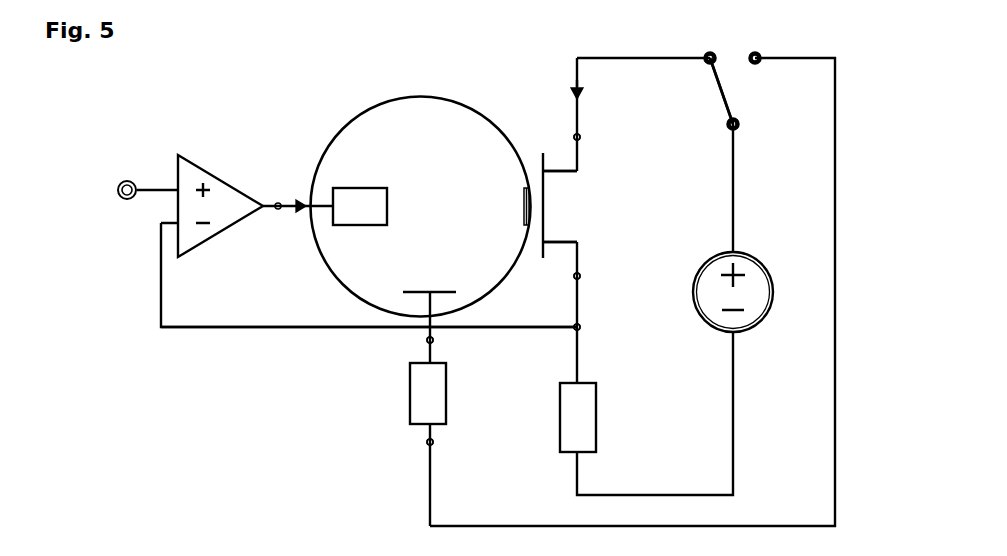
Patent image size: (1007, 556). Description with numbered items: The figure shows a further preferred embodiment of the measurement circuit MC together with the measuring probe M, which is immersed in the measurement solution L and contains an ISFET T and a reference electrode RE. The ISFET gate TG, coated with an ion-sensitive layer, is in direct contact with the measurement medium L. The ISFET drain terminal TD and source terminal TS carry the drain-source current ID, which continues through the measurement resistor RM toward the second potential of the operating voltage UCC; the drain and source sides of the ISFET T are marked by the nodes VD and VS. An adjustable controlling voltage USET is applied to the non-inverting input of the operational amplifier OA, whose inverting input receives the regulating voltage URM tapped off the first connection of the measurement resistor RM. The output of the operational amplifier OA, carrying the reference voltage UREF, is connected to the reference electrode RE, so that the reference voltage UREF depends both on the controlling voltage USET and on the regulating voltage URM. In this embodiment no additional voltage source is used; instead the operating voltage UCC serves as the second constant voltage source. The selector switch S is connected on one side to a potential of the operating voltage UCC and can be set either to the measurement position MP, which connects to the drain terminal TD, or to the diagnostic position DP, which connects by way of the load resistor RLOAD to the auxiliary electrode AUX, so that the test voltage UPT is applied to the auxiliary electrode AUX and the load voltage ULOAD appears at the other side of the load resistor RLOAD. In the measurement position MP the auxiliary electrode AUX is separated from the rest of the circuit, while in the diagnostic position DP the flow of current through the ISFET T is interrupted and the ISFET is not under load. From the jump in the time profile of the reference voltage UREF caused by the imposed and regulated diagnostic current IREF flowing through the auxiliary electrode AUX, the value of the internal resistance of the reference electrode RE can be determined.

The measuring probe M is at (328, 128).
The operational amplifier OA is at (220, 210).
The controlling voltage USET is at (101, 192).
The reference voltage UREF is at (275, 187).
The diagnostic current IREF is at (274, 227).
The reference electrode RE is at (360, 196).
The measurement solution L is at (423, 144).
The ISFET gate TG is at (512, 206).
The auxiliary electrode AUX is at (429, 281).
The ISFET T is at (603, 205).
The ISFET drain terminal TD is at (560, 160).
The ISFET source terminal TS is at (560, 255).
The drain voltage node VD is at (591, 137).
The source voltage node VS is at (590, 277).
The drain-source current ID is at (588, 92).
The measurement position MP is at (702, 45).
The diagnostic position DP is at (759, 45).
The selector switch S is at (729, 93).
The operating voltage UCC is at (753, 292).
The regulating voltage URM is at (596, 329).
The test voltage UPT is at (410, 343).
The load resistor RLOAD is at (455, 393).
The load voltage ULOAD is at (454, 442).
The measurement resistor RM is at (594, 417).
The measurement circuit MC is at (359, 459).